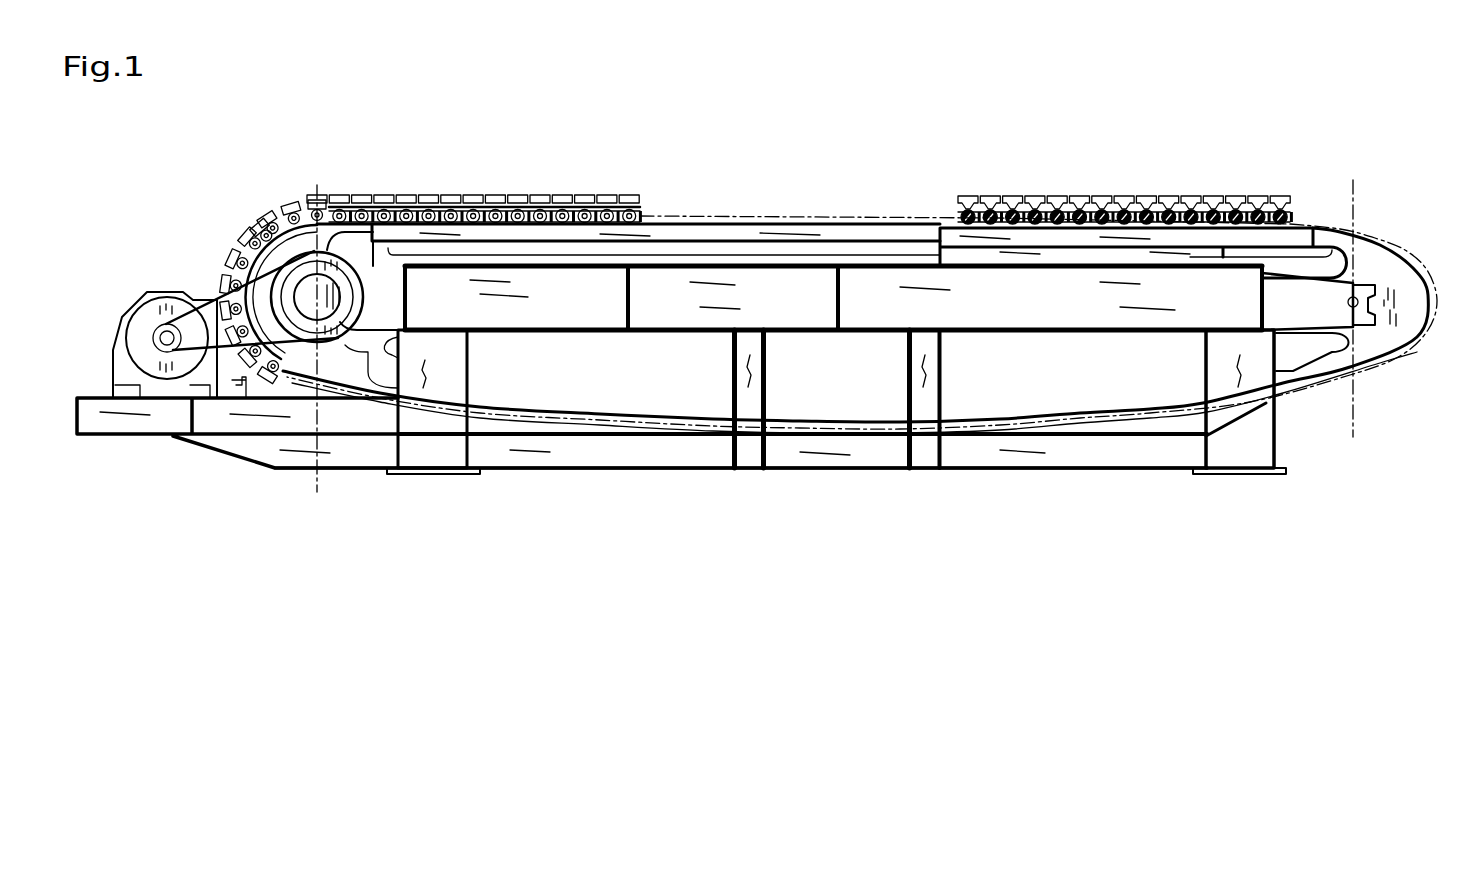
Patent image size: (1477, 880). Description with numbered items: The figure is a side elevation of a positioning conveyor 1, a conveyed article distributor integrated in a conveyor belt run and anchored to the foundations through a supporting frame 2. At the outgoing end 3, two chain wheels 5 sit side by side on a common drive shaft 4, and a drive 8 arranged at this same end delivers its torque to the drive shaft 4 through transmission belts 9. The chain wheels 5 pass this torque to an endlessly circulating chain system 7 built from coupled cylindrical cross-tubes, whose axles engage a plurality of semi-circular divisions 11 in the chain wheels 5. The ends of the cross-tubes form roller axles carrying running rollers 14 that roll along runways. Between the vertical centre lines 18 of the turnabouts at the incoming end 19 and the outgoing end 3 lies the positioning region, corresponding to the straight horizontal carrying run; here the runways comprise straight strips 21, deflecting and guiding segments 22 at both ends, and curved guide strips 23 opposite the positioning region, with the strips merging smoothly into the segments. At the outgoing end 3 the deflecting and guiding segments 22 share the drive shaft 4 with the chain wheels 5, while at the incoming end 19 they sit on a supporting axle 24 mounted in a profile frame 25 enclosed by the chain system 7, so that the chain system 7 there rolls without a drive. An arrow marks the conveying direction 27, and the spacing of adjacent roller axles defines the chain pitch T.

The positioning conveyor 1 is at (702, 178).
The supporting frame 2 is at (371, 465).
The outgoing end 3 is at (230, 208).
The drive shaft 4 is at (347, 289).
The chain wheels 5 is at (337, 378).
The chain system 7 is at (331, 223).
The drive 8 is at (144, 318).
The transmission belts 9 is at (207, 327).
The semi-circular divisions 11 is at (290, 214).
The running rollers 14 is at (301, 196).
The vertical centre lines 18 is at (315, 476).
The incoming end 19 is at (1404, 231).
The straight strips 21 is at (957, 229).
The deflecting and guiding segments 22 is at (260, 220).
The curved guide strips 23 is at (995, 438).
The supporting axle 24 is at (1347, 302).
The profile frame 25 is at (562, 336).
The conveying direction 27 is at (765, 180).
The chain pitch T is at (522, 163).